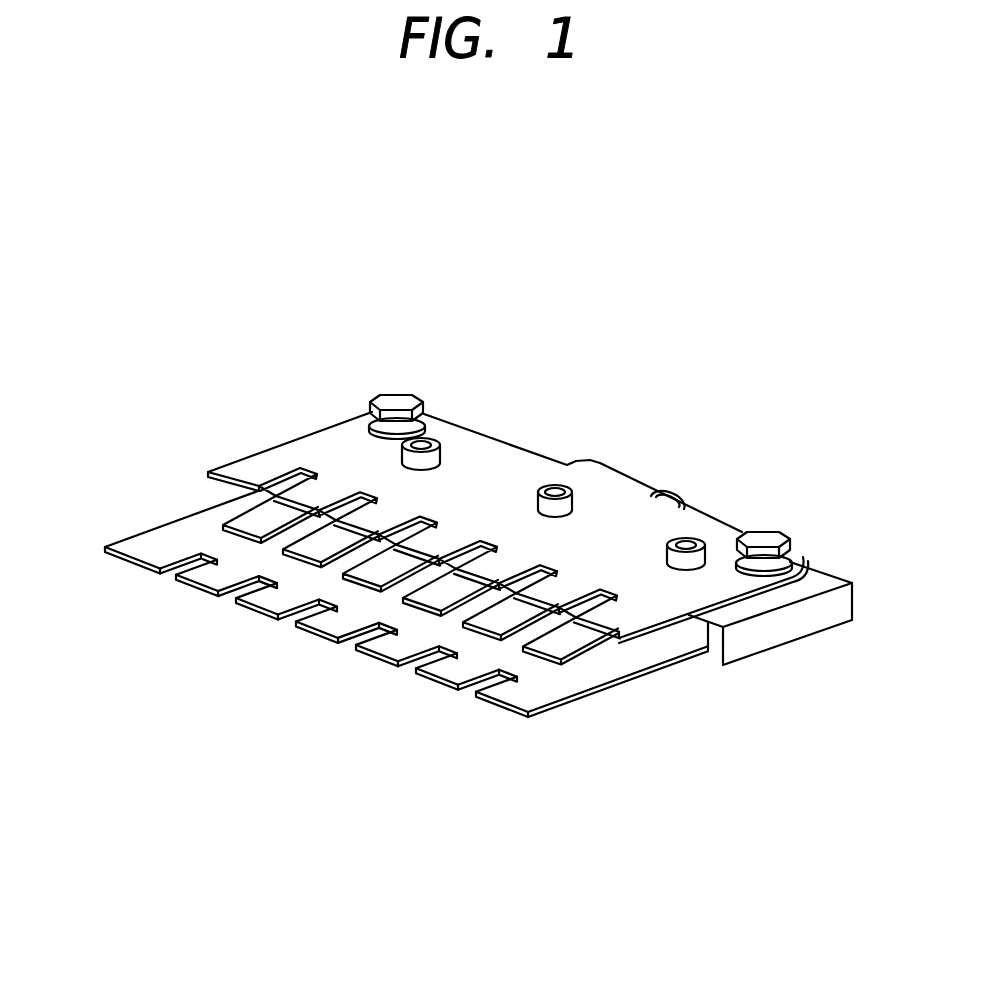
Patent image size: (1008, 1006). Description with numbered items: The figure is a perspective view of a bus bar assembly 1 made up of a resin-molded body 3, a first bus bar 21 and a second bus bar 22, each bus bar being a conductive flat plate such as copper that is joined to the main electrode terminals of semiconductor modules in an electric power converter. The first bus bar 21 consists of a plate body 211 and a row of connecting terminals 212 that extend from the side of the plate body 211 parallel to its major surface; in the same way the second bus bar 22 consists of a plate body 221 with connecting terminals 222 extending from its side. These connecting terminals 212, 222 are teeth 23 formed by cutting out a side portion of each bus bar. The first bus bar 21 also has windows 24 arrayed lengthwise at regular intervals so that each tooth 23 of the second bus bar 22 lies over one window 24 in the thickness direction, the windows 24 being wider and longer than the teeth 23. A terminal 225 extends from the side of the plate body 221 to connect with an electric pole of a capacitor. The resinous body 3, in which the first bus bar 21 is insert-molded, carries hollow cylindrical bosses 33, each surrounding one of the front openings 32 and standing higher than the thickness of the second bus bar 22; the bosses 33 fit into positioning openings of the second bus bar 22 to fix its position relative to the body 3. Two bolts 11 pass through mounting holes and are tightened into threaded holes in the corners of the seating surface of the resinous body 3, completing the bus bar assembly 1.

The bus bar assembly 1 is at (250, 712).
The resin-molded body 3 is at (788, 625).
The bolt 11 is at (393, 400).
The first bus bar 21 is at (602, 665).
The second bus bar 22 is at (348, 440).
The teeth 23 is at (265, 504).
The window 24 is at (518, 618).
The front opening 32 is at (557, 470).
The boss 33 is at (443, 458).
The plate body 211 is at (662, 655).
The connecting terminal 212 is at (429, 670).
The plate body 221 is at (517, 477).
The connecting terminal 222 is at (300, 497).
The terminal 225 is at (634, 483).